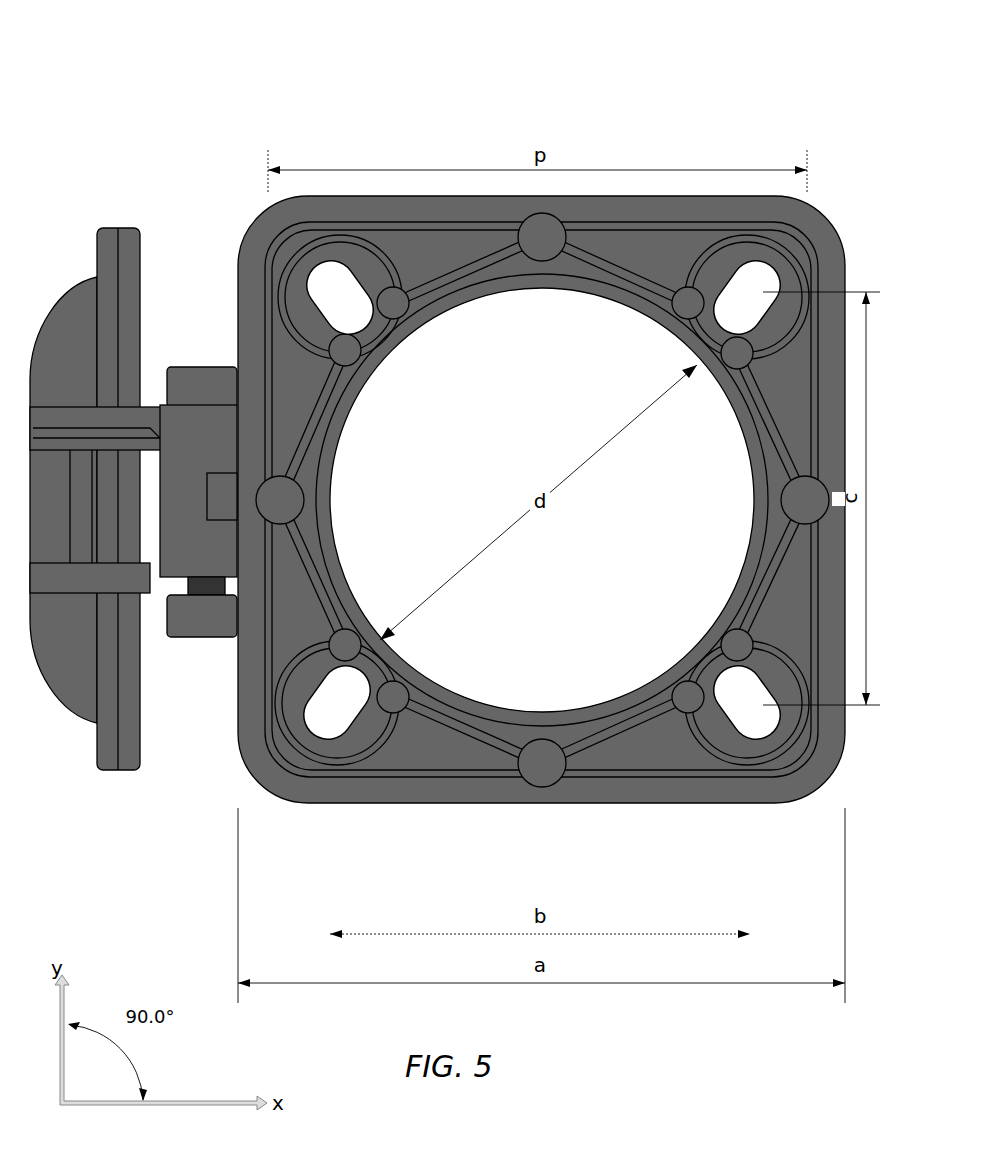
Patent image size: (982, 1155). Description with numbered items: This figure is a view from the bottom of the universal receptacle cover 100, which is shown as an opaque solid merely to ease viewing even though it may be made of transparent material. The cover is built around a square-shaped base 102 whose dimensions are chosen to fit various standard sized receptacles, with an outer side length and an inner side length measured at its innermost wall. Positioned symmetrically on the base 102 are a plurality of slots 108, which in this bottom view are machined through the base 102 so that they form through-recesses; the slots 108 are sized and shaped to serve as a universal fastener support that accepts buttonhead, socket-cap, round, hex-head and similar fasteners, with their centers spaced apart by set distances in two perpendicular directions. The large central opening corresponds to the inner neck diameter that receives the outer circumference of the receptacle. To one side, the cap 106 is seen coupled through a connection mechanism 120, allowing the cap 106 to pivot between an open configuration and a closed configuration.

The universal receptacle cover 100 is at (437, 474).
The base 102 is at (541, 433).
The cap 106 is at (105, 772).
The slots 108 is at (358, 315).
The connection mechanism 120 is at (203, 638).